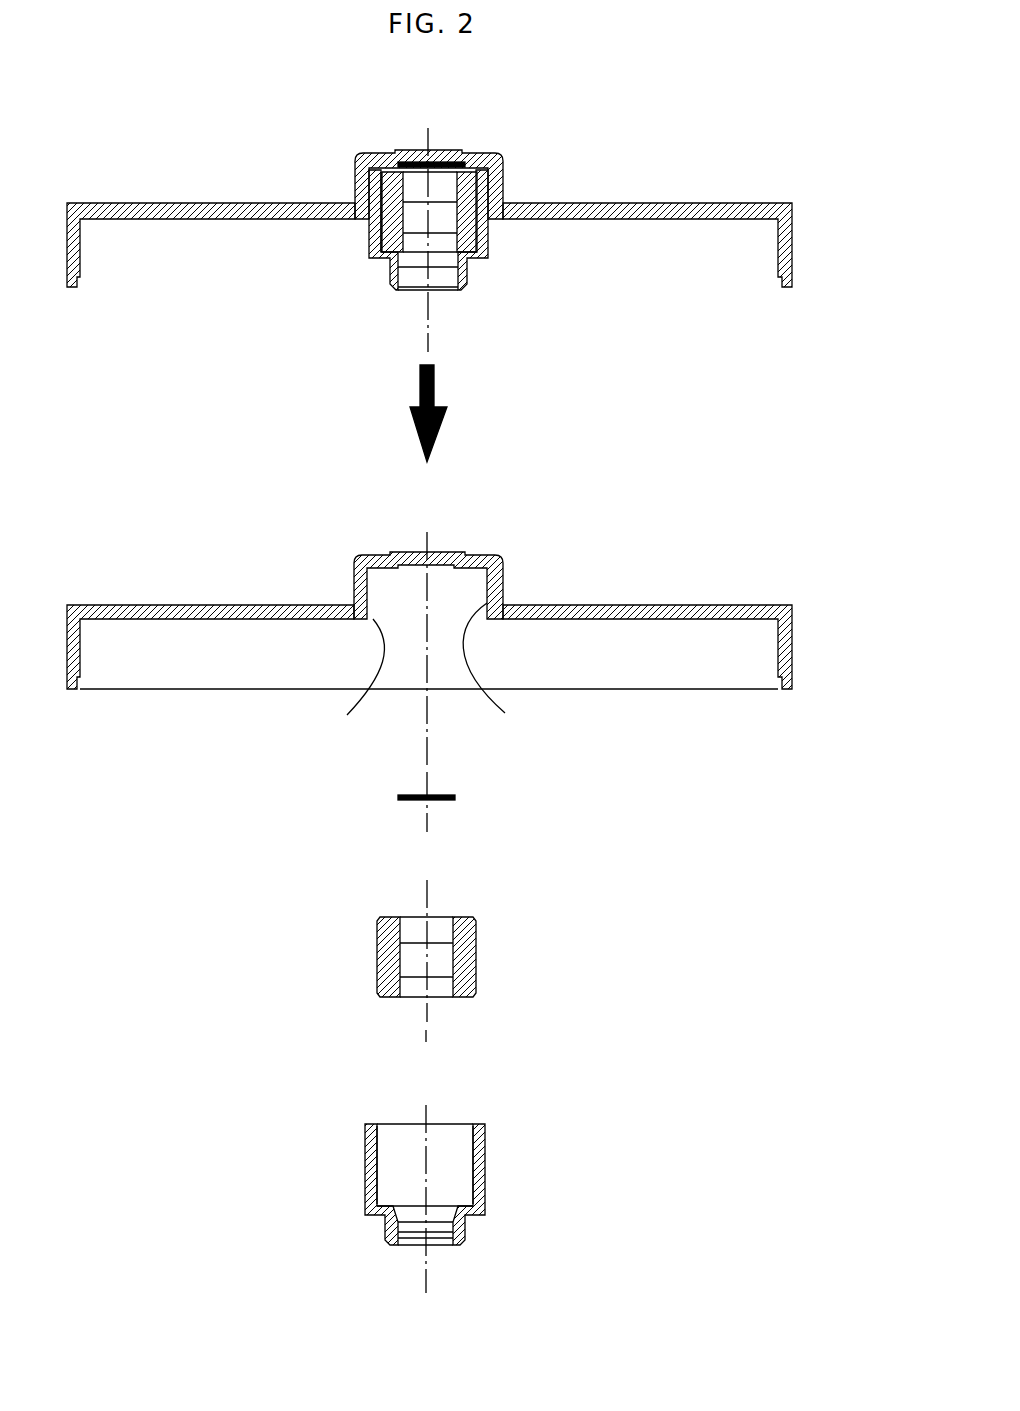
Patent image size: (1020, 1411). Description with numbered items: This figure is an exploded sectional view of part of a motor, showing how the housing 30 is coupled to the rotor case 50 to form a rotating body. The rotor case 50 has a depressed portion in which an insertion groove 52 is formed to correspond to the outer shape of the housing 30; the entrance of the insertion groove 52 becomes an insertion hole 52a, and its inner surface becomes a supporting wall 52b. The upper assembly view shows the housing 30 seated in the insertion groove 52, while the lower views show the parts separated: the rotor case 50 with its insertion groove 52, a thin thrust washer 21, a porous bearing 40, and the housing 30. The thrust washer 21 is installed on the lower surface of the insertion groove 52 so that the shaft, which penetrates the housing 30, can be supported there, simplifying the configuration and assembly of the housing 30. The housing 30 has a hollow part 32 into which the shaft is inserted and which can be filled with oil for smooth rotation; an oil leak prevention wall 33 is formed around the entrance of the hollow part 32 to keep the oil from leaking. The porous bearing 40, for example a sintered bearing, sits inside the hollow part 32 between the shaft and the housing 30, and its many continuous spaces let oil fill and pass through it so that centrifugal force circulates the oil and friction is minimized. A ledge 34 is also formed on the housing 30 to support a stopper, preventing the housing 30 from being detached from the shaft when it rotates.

The thrust washer 21 is at (440, 160).
The housing 30 is at (437, 697).
The hollow part 32 is at (358, 240).
The oil leak prevention wall 33 is at (468, 278).
The ledge 34 is at (463, 291).
The porous bearing 40 is at (468, 226).
The rotor case 50 is at (676, 210).
The insertion groove 52 is at (497, 170).
The insertion hole 52a is at (347, 686).
The supporting wall 52b is at (506, 678).